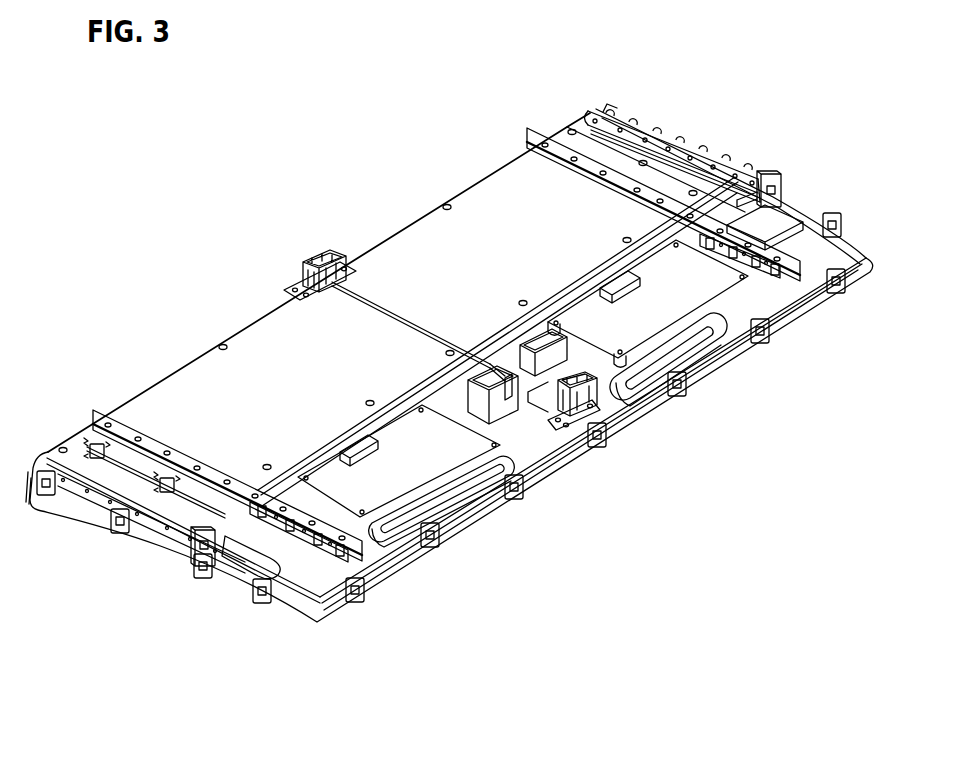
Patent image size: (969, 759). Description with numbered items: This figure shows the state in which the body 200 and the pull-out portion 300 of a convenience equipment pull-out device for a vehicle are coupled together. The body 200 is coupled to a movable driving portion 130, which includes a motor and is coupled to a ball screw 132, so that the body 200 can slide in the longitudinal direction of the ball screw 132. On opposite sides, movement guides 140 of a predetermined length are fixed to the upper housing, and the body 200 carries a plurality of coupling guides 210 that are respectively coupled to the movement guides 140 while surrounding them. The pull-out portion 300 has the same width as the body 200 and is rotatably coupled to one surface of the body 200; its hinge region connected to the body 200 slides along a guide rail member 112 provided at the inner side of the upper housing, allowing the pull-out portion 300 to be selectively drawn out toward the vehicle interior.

The guide rail member 112 is at (684, 148).
The movable driving portion 130 is at (540, 393).
The ball screw 132 is at (390, 313).
The movement guide 140 is at (758, 185).
The body 200 is at (449, 365).
The coupling guide 210 is at (713, 188).
The pull-out portion 300 is at (485, 198).